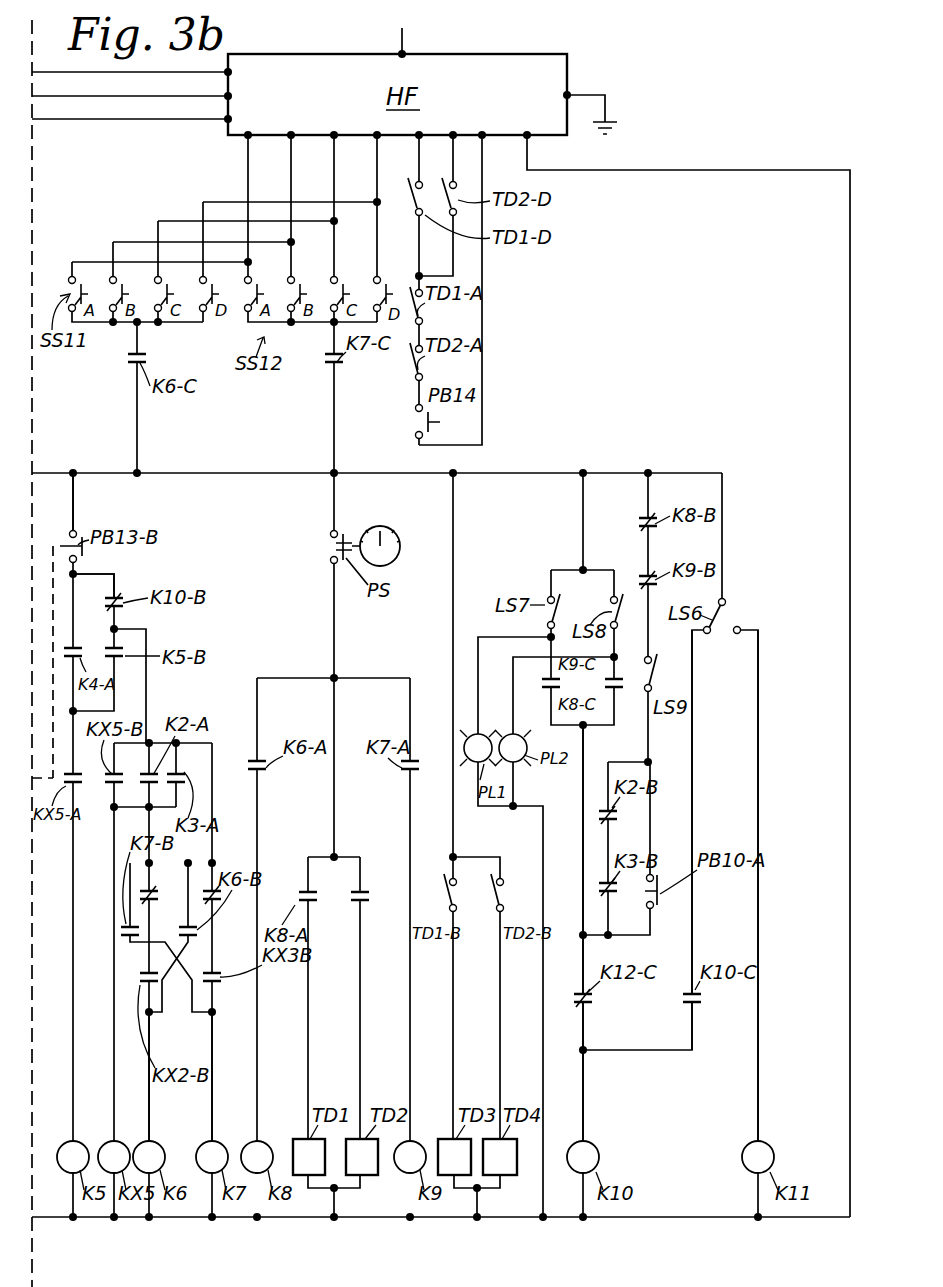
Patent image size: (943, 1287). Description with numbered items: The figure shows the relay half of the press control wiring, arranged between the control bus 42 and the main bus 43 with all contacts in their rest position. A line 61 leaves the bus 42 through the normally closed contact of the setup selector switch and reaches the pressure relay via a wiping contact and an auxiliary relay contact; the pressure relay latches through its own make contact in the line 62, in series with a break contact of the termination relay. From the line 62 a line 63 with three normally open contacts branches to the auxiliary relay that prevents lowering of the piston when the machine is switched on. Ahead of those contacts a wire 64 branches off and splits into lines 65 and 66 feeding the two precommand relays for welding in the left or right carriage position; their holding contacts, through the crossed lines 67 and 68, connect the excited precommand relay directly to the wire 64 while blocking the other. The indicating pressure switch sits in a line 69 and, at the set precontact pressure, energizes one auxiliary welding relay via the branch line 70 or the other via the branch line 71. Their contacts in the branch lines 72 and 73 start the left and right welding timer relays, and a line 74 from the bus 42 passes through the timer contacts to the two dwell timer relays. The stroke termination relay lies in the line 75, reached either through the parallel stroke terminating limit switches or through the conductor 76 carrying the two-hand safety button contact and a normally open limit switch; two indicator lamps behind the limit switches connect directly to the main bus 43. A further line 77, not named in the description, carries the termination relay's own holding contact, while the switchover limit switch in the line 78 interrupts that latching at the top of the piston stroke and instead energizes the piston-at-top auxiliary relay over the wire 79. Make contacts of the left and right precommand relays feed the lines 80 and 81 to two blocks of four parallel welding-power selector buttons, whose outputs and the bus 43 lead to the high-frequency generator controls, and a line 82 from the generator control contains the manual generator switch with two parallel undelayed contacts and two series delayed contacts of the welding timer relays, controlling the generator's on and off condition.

The bus 42 is at (252, 472).
The main bus 43 is at (848, 484).
The line 61 is at (75, 500).
The line 62 is at (100, 574).
The line 63 is at (148, 645).
The wire 64 is at (213, 758).
The line 65 is at (150, 1108).
The line 66 is at (213, 1104).
The crossed line 67 is at (165, 990).
The crossed line 68 is at (173, 968).
The line 69 is at (336, 500).
The branch line 70 is at (258, 1104).
The branch line 71 is at (410, 1085).
The branch line 72 is at (309, 1085).
The fourth branch line 73 is at (361, 1075).
The line 74 is at (455, 512).
The line 75 is at (585, 514).
The conductor 76 is at (650, 493).
The K10-C contact branch 77 is at (694, 800).
The line 78 is at (724, 505).
The wire 79 is at (759, 1078).
The line 80 is at (139, 437).
The line 81 is at (336, 433).
The line 82 is at (484, 420).